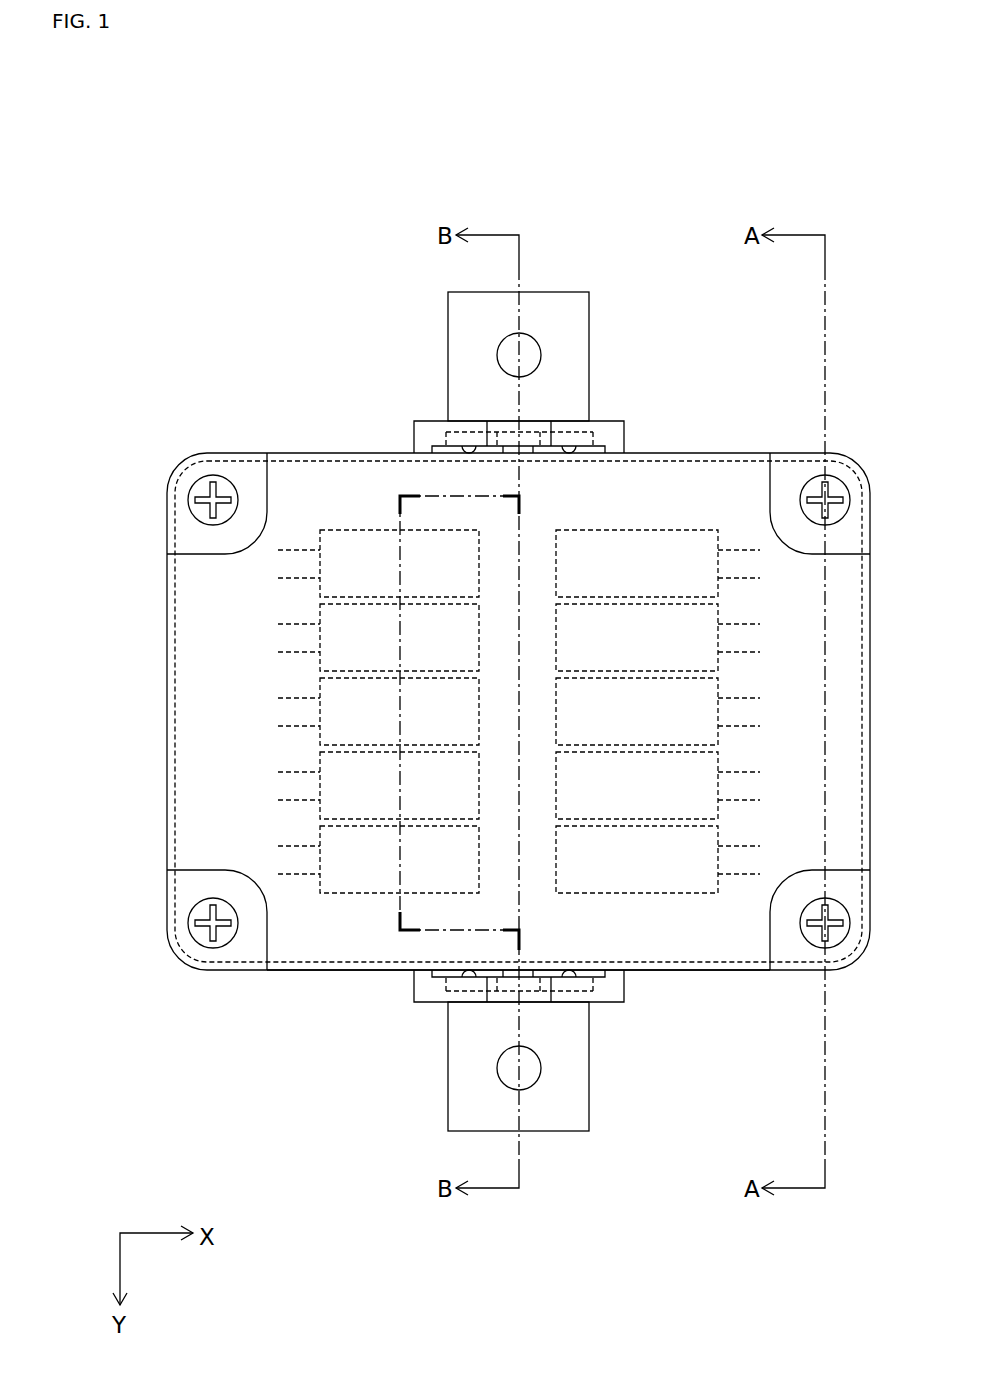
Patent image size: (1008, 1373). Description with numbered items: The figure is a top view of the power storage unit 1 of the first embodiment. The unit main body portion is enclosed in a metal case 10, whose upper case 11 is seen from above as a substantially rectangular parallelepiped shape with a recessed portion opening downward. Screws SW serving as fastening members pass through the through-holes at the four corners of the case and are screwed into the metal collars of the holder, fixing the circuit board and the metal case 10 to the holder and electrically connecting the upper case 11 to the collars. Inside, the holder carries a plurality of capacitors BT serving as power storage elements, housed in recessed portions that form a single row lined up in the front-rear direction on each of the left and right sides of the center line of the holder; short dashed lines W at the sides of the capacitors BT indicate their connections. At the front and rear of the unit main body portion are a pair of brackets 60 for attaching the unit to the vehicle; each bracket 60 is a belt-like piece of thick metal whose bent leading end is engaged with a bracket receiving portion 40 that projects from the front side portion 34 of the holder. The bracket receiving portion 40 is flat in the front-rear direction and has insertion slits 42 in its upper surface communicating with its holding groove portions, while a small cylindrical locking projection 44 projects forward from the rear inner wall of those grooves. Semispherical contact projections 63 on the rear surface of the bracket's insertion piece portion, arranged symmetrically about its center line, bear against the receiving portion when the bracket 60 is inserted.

The power storage unit 1 is at (588, 201).
The metal case 10 is at (690, 485).
The upper case 11 is at (518, 711).
The front side portion 34 is at (300, 972).
The screw SW is at (202, 487).
The capacitor BT is at (643, 530).
The wire W is at (733, 550).
The bracket receiving portion 40 is at (627, 1022).
The insertion slit 42 is at (595, 969).
The locking projection 44 is at (523, 977).
The contact projection 63 is at (470, 969).
The bracket 60 is at (571, 1158).